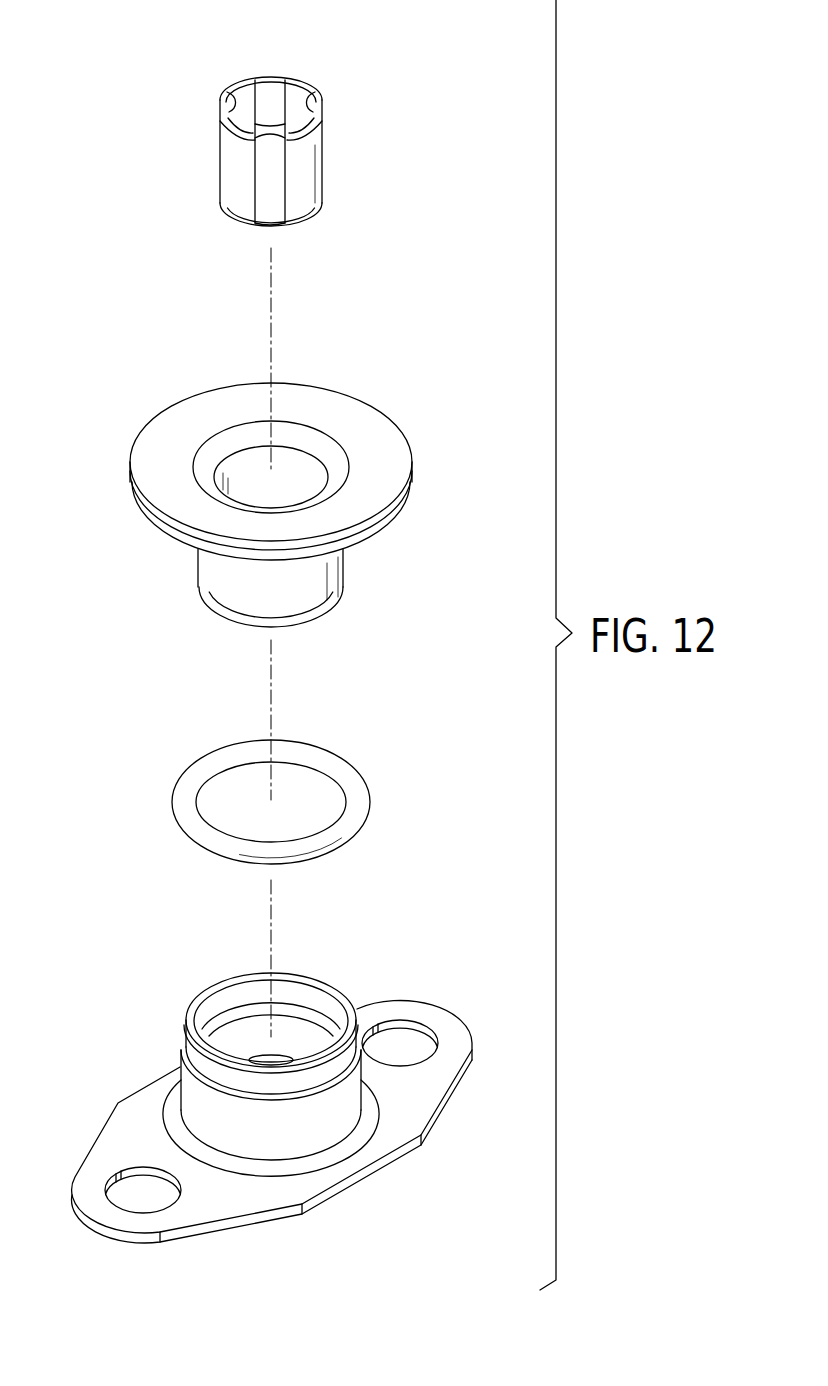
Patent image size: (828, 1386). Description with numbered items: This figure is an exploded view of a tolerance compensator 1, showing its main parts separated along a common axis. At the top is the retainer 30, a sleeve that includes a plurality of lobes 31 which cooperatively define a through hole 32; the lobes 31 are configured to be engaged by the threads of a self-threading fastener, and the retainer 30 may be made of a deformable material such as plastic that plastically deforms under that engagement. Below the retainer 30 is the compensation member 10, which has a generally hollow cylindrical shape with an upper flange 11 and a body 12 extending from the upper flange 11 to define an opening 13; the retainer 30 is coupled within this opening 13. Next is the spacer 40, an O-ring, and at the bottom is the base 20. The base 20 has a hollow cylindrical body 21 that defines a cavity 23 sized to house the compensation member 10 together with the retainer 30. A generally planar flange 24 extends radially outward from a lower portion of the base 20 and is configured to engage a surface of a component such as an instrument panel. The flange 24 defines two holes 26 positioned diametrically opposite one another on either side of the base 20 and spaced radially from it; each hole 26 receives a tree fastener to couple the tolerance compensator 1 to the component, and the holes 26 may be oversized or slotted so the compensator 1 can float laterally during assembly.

The tolerance compensator 1 is at (377, 101).
The compensation member 10 is at (357, 462).
The upper flange 11 is at (163, 460).
The body 12 is at (198, 564).
The opening 13 is at (286, 470).
The base 20 is at (381, 1083).
The hollow cylindrical body 21 is at (179, 1068).
The cavity 23 is at (253, 1046).
The flange 24 is at (217, 1197).
The holes 26 is at (405, 1038).
The retainer 30 is at (298, 200).
The lobes 31 is at (307, 157).
The through hole 32 is at (270, 100).
The spacer 40 is at (312, 762).